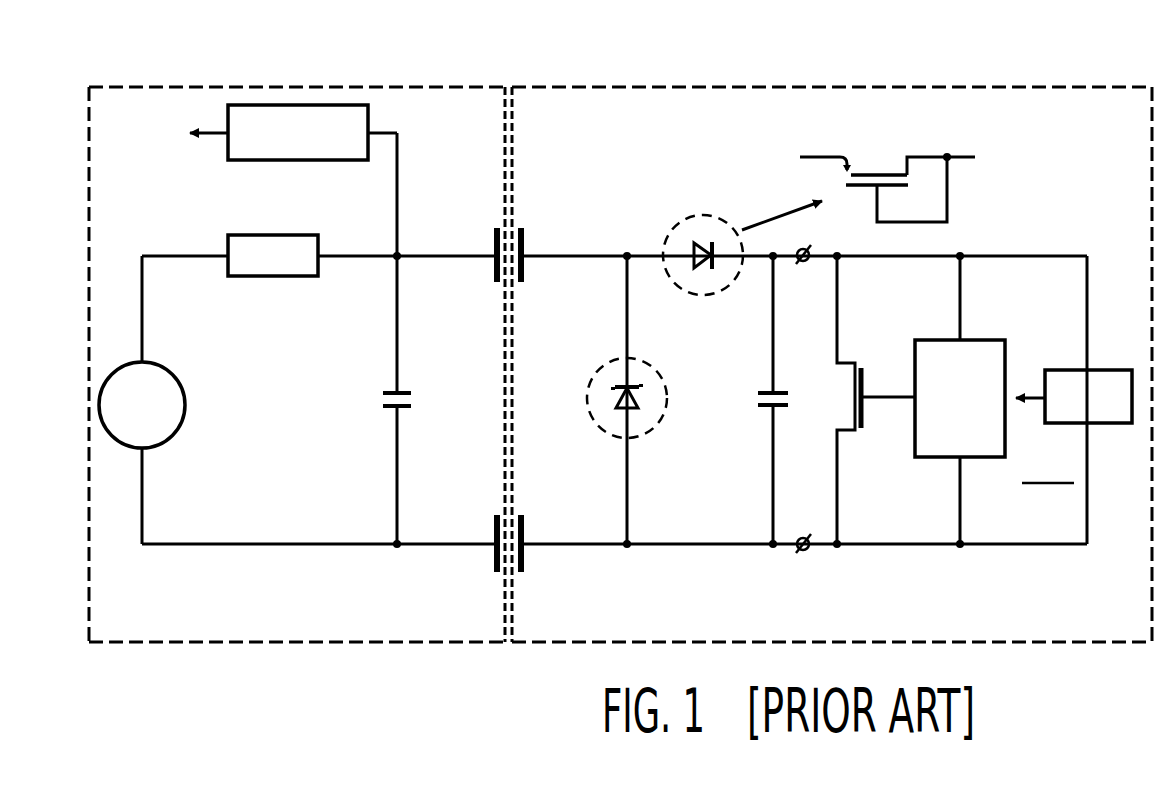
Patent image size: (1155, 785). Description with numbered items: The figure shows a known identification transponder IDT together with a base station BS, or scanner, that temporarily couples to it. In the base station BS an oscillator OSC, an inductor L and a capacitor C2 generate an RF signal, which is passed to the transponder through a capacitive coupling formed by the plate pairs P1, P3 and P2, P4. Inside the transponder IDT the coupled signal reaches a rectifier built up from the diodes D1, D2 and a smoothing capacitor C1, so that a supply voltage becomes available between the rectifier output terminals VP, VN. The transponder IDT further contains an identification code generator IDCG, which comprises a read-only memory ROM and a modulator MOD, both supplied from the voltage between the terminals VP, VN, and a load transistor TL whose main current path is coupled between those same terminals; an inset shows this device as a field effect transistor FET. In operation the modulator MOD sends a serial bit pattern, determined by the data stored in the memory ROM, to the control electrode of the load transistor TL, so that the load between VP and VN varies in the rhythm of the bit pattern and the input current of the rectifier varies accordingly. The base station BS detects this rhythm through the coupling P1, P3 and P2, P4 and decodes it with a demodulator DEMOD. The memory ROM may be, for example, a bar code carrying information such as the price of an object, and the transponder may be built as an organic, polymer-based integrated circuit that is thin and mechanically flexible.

The base station BS is at (298, 86).
The identification transponder IDT is at (820, 86).
The demodulator DEMOD is at (245, 160).
The inductor L is at (270, 278).
The oscillator OSC is at (185, 402).
The capacitor C2 is at (413, 405).
The coupling plate P3 is at (493, 241).
The coupling plate P1 is at (525, 241).
The coupling plate P4 is at (493, 530).
The coupling plate P2 is at (525, 530).
The diode D1 is at (603, 404).
The diode D2 is at (703, 296).
The field effect transistor FET is at (878, 166).
The smoothing capacitor C1 is at (755, 396).
The output terminal VP is at (803, 262).
The output terminal VN is at (803, 536).
The load transistor TL is at (853, 364).
The modulator MOD is at (988, 338).
The read-only memory ROM is at (1113, 368).
The identification code generator IDCG is at (1048, 468).